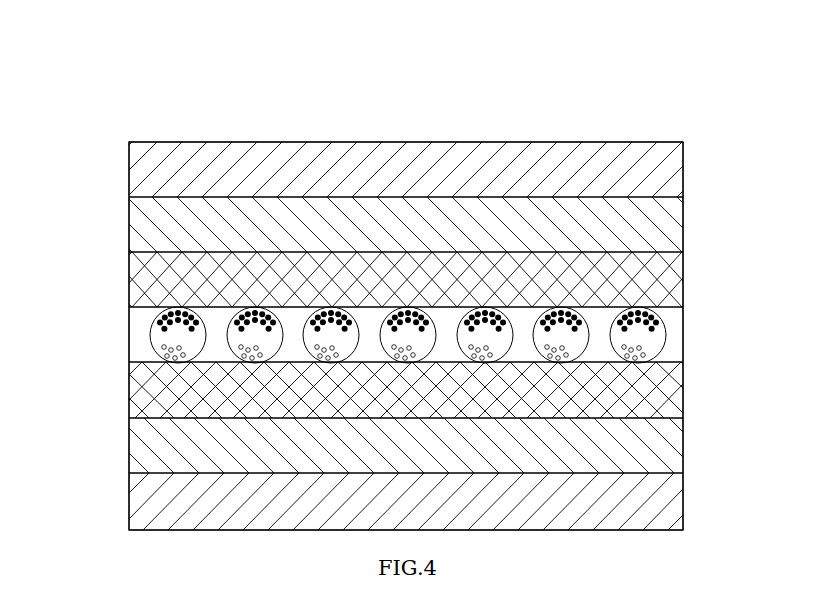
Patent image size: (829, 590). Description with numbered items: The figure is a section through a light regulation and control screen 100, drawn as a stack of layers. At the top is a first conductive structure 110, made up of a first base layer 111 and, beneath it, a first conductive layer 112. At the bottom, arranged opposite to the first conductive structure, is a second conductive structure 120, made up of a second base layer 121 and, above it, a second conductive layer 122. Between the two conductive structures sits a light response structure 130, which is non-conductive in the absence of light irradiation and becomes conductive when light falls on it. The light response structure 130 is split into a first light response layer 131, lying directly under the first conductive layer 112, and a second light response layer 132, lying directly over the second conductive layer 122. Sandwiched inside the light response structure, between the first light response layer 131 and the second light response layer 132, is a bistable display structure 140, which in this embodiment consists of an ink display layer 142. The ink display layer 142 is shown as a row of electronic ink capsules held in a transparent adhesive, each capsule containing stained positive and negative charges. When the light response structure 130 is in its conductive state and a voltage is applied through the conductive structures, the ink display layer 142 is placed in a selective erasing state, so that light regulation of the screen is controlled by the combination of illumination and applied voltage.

The light regulation and control screen 100 is at (93, 105).
The first conductive structure 110 is at (745, 225).
The first base layer 111 is at (676, 168).
The first conductive layer 112 is at (676, 237).
The second conductive structure 120 is at (737, 447).
The second base layer 121 is at (676, 512).
The second conductive layer 122 is at (676, 447).
The light response structure 130 is at (73, 285).
The first light response layer 131 is at (129, 272).
The second light response layer 132 is at (129, 392).
The bistable display structure 140 is at (741, 328).
The ink display layer 142 is at (676, 337).